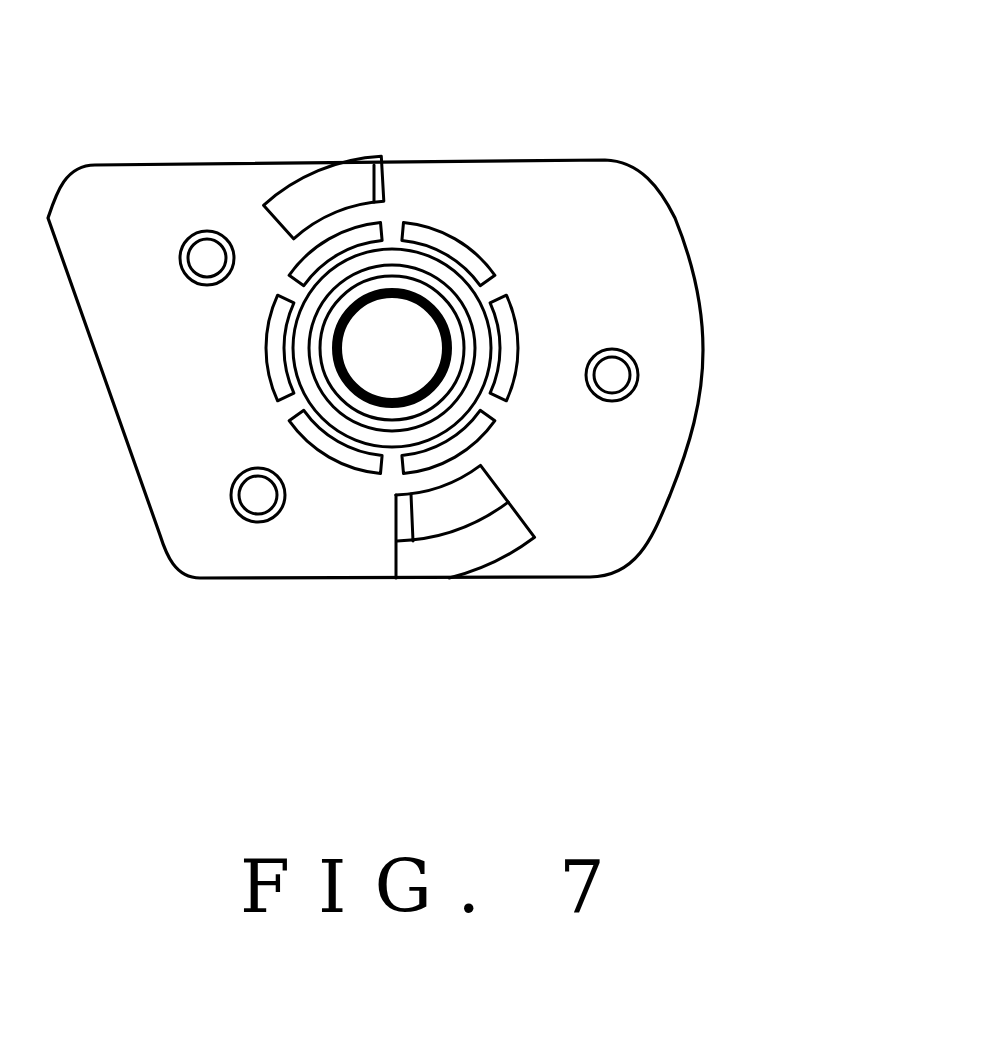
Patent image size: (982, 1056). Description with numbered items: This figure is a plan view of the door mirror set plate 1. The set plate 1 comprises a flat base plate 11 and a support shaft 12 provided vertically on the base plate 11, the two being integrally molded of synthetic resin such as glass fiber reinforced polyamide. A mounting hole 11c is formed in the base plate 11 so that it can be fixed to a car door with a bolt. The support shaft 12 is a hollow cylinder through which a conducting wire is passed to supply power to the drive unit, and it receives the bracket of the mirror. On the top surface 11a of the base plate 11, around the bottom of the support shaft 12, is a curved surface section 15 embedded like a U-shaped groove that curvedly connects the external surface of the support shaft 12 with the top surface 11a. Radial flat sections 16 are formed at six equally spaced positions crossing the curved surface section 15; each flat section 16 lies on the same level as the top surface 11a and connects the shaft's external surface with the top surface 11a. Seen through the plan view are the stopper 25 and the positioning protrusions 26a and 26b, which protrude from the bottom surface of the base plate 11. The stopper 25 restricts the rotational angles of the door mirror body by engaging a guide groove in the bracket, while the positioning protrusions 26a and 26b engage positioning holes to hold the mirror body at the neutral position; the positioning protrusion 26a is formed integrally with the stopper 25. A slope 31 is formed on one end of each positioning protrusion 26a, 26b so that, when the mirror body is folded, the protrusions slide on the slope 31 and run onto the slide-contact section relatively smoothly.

The set plate 1 is at (618, 152).
The base plate 11 is at (678, 318).
The top surface 11a is at (652, 256).
The mounting hole 11c is at (613, 376).
The support shaft 12 is at (447, 280).
The curved surface section 15 is at (333, 447).
The flat section 16 is at (490, 403).
The stopper 25 is at (493, 540).
The positioning protrusion 26a is at (430, 510).
The positioning protrusion 26b is at (317, 198).
The slope 31 is at (386, 192).